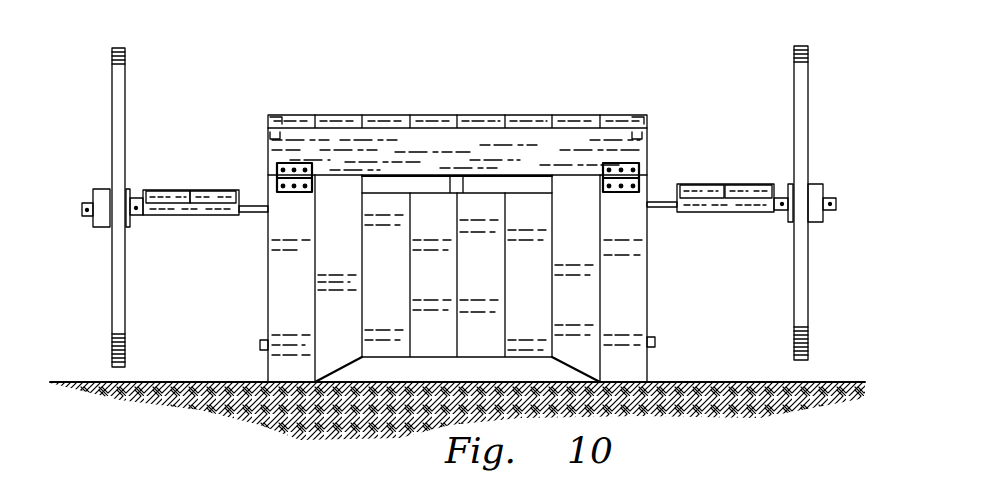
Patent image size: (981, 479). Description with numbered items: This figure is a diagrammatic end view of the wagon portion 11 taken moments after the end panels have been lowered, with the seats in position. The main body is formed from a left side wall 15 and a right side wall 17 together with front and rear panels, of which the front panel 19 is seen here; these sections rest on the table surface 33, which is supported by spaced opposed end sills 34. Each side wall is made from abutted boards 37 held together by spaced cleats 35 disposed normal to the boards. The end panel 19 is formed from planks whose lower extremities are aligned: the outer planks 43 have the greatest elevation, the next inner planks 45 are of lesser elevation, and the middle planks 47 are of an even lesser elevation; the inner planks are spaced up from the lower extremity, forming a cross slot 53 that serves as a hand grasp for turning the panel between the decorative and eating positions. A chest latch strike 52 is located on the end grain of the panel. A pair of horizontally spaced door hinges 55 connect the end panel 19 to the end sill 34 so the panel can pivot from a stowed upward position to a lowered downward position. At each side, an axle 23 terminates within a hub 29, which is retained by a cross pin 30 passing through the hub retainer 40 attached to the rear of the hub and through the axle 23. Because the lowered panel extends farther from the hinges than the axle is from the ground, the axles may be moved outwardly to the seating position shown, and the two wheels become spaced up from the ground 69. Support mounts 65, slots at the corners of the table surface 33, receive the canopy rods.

The wagon portion 11 is at (532, 80).
The left side wall 15 is at (191, 169).
The right side wall 17 is at (731, 169).
The front panel 19 is at (672, 357).
The axle 23 is at (253, 213).
The hub 29 is at (97, 225).
The cross pin 30 is at (137, 208).
The table surface 33 is at (425, 125).
The end sill 34 is at (475, 130).
The cleat 35 is at (215, 215).
The abutted board 37 is at (213, 193).
The hub retainer 40 is at (137, 227).
The outer plank 43 is at (304, 309).
The inner plank 45 is at (352, 324).
The center panel 47 is at (397, 257).
The chest latch strike 52 is at (263, 340).
The cross slot 53 is at (382, 187).
The door hinge 55 is at (293, 163).
The support mount 65 is at (640, 116).
The ground 69 is at (384, 427).